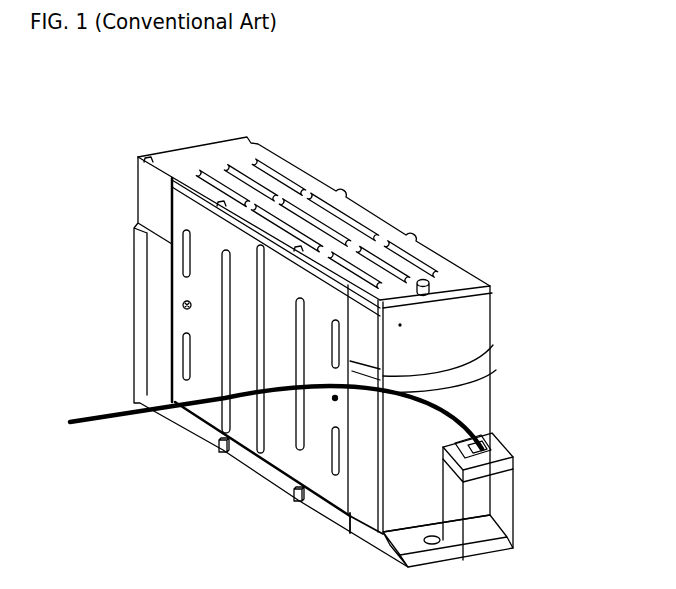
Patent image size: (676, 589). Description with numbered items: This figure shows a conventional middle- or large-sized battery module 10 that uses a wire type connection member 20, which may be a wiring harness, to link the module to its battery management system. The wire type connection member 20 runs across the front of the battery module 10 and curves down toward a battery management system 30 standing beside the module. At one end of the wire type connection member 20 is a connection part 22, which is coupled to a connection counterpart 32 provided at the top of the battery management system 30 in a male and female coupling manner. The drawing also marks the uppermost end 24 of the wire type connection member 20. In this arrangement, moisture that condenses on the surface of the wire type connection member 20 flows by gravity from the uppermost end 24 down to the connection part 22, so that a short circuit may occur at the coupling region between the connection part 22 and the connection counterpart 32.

The middle- or large-sized battery module 10 is at (96, 122).
The wire type connection member 20 is at (147, 410).
The connection part 22 is at (482, 440).
The uppermost end 24 is at (480, 357).
The battery management system 30 is at (500, 500).
The connection counterpart 32 is at (508, 455).